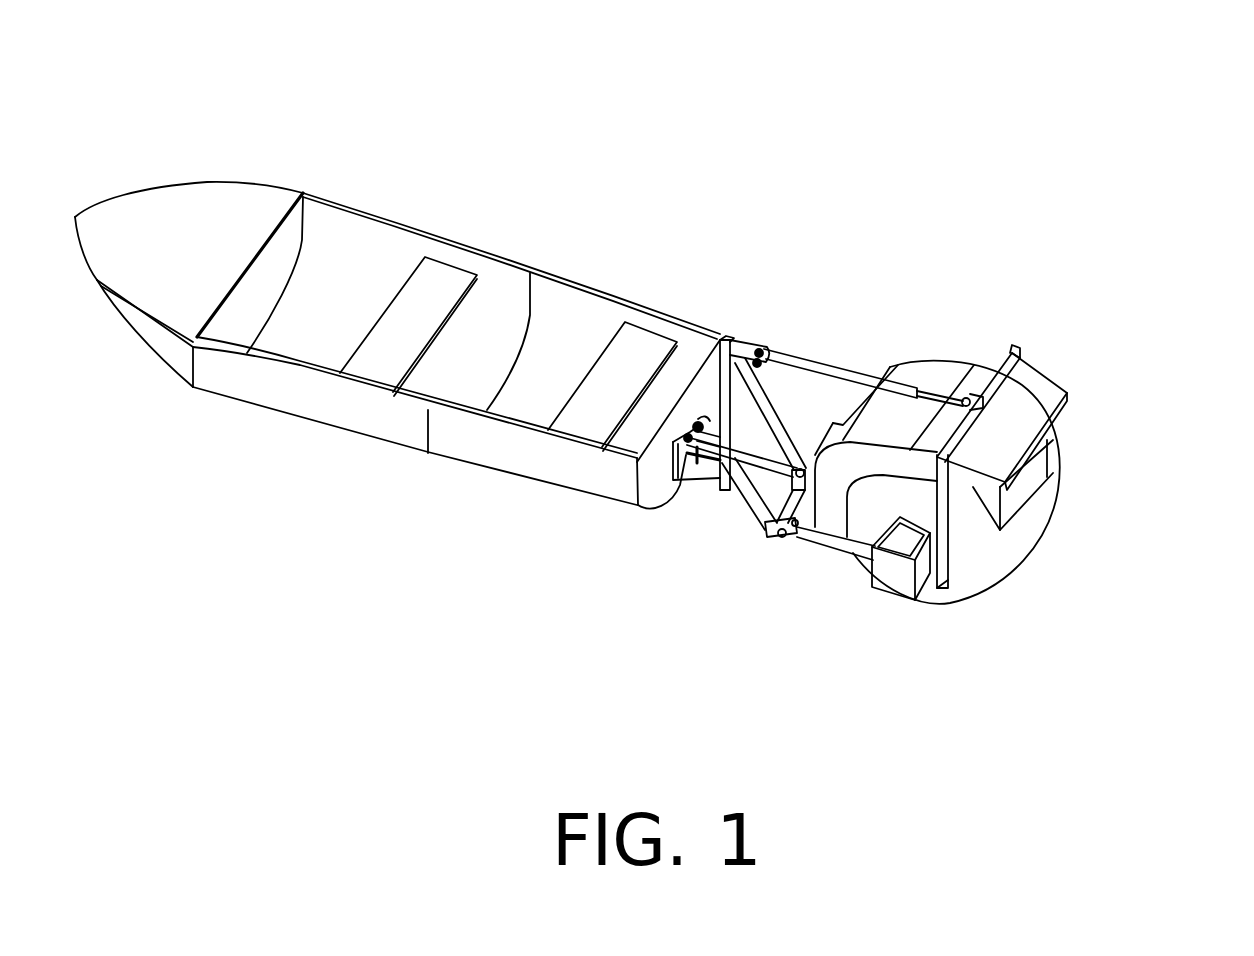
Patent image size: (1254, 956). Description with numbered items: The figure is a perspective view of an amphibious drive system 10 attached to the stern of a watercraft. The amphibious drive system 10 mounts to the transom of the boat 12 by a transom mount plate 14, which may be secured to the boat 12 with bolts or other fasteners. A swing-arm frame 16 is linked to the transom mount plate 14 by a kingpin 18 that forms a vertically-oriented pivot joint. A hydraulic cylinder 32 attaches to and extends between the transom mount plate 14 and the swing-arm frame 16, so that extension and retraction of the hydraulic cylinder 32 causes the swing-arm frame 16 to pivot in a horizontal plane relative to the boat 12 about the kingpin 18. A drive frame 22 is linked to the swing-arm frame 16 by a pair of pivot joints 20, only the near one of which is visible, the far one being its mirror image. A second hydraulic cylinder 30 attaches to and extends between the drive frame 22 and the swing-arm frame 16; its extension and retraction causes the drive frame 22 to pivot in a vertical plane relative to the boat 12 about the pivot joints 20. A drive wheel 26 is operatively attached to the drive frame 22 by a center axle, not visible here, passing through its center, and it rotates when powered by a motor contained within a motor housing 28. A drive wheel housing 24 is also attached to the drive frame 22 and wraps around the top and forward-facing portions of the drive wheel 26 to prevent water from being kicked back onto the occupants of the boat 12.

The amphibious drive system 10 is at (1017, 283).
The boat 12 is at (363, 252).
The transom mount plate 14 is at (685, 453).
The swing-arm frame 16 is at (745, 373).
The kingpin 18 is at (700, 424).
The pivot joints 20 is at (778, 537).
The drive frame 22 is at (940, 493).
The drive wheel housing 24 is at (1027, 407).
The drive wheel 26 is at (970, 560).
The motor housing 28 is at (895, 575).
The hydraulic cylinder 30 is at (872, 382).
The hydraulic cylinder 32 is at (725, 467).